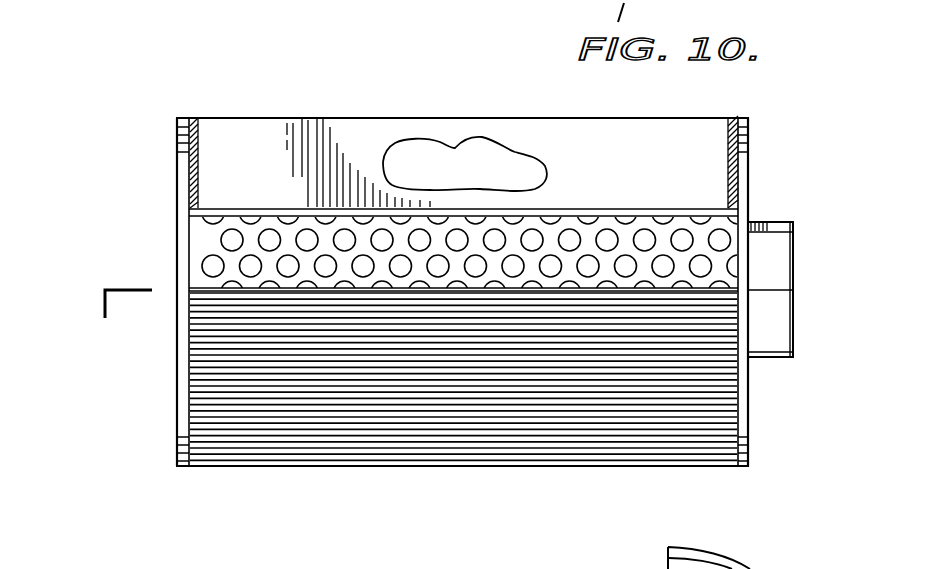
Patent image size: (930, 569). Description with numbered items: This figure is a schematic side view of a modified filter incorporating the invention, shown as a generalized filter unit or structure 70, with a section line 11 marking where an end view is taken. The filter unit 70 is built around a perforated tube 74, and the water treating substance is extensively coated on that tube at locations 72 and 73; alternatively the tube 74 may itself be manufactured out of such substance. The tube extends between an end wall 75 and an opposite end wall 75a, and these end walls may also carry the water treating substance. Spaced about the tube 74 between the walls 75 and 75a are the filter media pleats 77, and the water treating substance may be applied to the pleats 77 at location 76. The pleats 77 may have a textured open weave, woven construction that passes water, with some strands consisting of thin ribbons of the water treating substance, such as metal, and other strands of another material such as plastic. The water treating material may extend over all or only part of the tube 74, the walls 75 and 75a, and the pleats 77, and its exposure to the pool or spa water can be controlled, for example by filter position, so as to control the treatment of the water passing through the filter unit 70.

The section line 11 is at (245, 78).
The filter unit 70 is at (386, 475).
The water treating substance coating 72 is at (199, 133).
The water treating substance coating 73 is at (730, 131).
The perforated tube 74 is at (581, 226).
The end wall 75 is at (176, 240).
The end wall 75a is at (750, 187).
The water treating substance coating 76 is at (455, 148).
The filter media pleats 77 is at (323, 143).